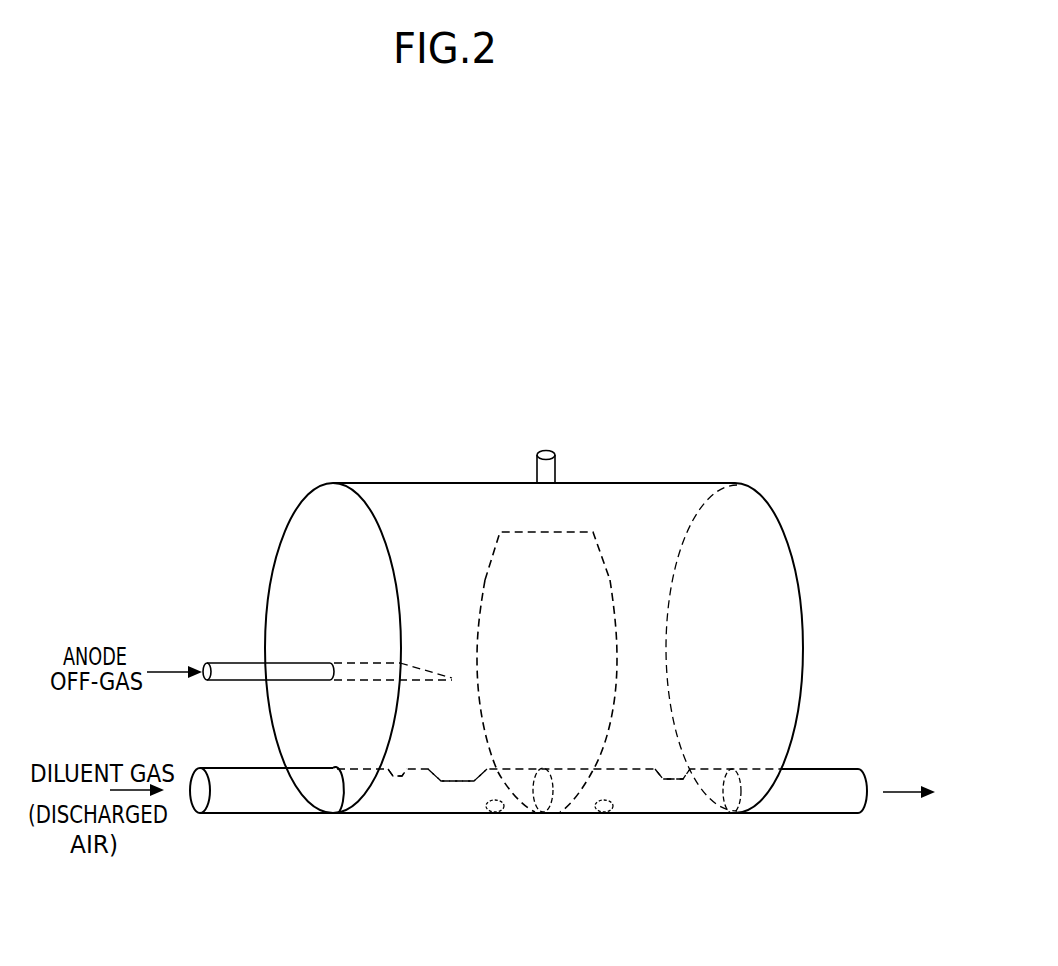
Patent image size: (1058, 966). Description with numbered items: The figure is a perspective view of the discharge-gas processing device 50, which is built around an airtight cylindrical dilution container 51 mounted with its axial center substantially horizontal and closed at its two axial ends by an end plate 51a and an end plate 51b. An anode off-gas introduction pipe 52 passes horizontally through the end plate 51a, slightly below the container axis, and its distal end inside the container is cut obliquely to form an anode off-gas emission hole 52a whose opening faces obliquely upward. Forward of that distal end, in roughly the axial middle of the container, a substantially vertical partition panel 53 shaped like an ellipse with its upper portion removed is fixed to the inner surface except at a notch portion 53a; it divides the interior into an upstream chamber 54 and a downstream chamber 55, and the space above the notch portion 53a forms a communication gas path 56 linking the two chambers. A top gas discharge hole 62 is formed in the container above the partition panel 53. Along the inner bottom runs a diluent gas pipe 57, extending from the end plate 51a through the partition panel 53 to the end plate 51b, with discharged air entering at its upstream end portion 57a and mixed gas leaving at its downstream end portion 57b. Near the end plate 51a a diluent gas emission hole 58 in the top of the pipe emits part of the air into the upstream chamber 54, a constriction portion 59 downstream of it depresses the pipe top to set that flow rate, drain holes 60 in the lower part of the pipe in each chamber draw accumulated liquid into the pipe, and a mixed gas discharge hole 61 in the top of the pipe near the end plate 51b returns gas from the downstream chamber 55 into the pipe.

The discharge-gas processing device 50 is at (458, 380).
The dilution container 51 is at (683, 484).
The end plate 51a is at (303, 527).
The end plate 51b is at (763, 577).
The anode off-gas introduction pipe 52 is at (231, 660).
The anode off-gas emission hole 52a is at (420, 672).
The partition panel 53 is at (488, 558).
The notch portion 53a is at (563, 525).
The upstream chamber 54 is at (423, 723).
The downstream chamber 55 is at (635, 720).
The communication gas path 56 is at (520, 505).
The diluent gas pipe 57 is at (275, 815).
The upstream end portion 57a is at (223, 815).
The downstream end portion 57b is at (833, 815).
The diluent gas emission hole 58 is at (395, 773).
The constriction portion 59 is at (444, 800).
The drain holes 60 is at (495, 815).
The mixed gas discharge hole 61 is at (673, 748).
The top gas discharge hole 62 is at (546, 452).